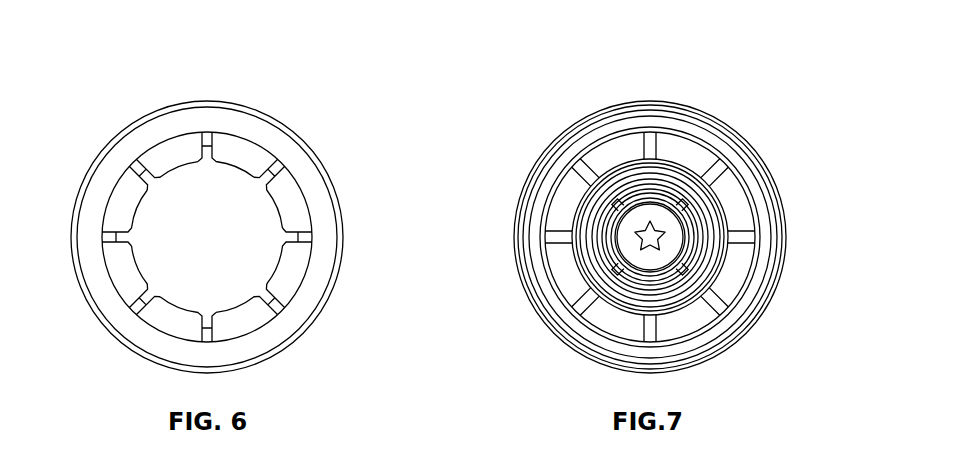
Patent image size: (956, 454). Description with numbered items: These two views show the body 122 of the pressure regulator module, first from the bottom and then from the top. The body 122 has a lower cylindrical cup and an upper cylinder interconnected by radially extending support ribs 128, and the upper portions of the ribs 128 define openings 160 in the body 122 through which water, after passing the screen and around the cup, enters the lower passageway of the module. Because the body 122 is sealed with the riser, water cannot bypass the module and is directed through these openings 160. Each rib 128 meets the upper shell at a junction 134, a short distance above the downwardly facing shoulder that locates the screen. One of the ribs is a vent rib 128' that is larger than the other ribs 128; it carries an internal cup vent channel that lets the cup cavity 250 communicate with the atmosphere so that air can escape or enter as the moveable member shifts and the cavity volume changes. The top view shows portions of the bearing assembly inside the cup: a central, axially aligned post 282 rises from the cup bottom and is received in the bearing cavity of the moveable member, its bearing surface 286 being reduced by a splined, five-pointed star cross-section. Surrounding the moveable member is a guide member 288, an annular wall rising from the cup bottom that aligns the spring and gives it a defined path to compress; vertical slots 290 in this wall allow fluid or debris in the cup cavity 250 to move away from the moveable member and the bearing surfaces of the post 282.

In FIG. 6, the body 122 is at (114, 56).
In FIG. 7, the body 122 is at (494, 56).
In FIG. 6, the support ribs 128 is at (247, 237).
In FIG. 7, the support ribs 128 is at (693, 202).
In FIG. 6, the vent rib 128' is at (338, 256).
In FIG. 6, the openings 160 is at (178, 150).
In FIG. 7, the openings 160 is at (610, 323).
In FIG. 7, the junction 134 is at (730, 300).
In FIG. 7, the cup cavity 250 is at (600, 303).
In FIG. 7, the post 282 is at (637, 262).
In FIG. 7, the bearing surface 286 is at (659, 226).
In FIG. 7, the guide member 288 is at (627, 237).
In FIG. 7, the vertical slots 290 is at (607, 180).